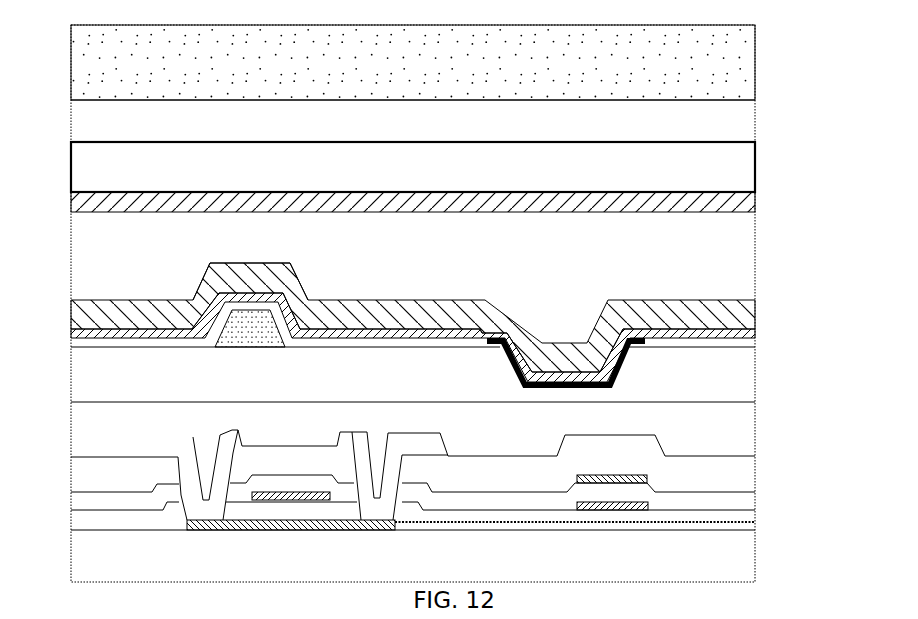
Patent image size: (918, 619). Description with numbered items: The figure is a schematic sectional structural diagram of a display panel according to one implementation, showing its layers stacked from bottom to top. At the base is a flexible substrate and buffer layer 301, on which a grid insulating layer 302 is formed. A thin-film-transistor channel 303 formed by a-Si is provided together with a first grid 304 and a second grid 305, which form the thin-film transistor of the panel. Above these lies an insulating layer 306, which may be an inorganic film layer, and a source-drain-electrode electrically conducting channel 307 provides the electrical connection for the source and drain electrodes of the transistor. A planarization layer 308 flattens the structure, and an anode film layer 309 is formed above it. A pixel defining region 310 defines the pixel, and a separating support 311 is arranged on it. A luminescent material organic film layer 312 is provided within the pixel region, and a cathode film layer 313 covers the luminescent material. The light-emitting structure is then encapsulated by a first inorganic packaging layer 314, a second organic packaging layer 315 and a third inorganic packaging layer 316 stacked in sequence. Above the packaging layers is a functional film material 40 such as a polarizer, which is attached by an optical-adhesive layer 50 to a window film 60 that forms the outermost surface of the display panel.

The window film 60 is at (693, 62).
The optical-adhesive layer 50 is at (700, 123).
The functional film material 40 is at (720, 164).
The third inorganic packaging layer 316 is at (653, 206).
The second organic packaging layer 315 is at (650, 243).
The first inorganic packaging layer 314 is at (650, 305).
The cathode film layer 313 is at (640, 325).
The luminescent material organic film layer 312 is at (250, 304).
The separating support 311 is at (263, 328).
The pixel defining region 310 is at (240, 362).
The anode film layer 309 is at (612, 392).
The planarization layer 308 is at (398, 409).
The source-drain-electrode electrically conducting channel 307 is at (237, 440).
The insulating layer 306 is at (610, 446).
The second grid 305 is at (610, 478).
The first grid 304 is at (640, 508).
The thin-film-transistor channel 303 is at (648, 523).
The grid insulating layer 302 is at (172, 508).
The flexible substrate and buffer layer 301 is at (680, 551).